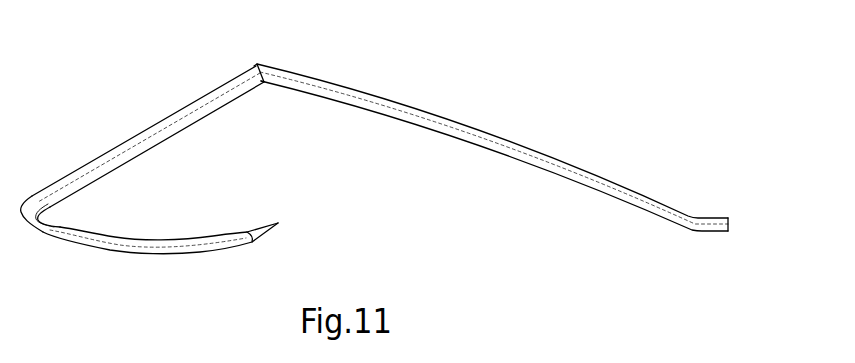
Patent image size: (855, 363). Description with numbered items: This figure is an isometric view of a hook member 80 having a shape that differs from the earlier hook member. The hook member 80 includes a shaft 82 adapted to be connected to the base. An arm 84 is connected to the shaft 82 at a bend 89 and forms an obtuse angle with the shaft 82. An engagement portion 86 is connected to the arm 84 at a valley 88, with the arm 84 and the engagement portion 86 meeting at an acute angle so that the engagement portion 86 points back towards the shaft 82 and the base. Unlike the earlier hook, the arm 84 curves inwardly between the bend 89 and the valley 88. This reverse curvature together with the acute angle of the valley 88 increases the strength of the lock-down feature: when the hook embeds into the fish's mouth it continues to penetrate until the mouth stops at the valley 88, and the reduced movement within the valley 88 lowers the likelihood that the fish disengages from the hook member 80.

The hook member 80 is at (374, 171).
The shaft 82 is at (568, 162).
The arm 84 is at (153, 127).
The engagement portion 86 is at (176, 255).
The valley 88 is at (44, 212).
The bend 89 is at (262, 89).